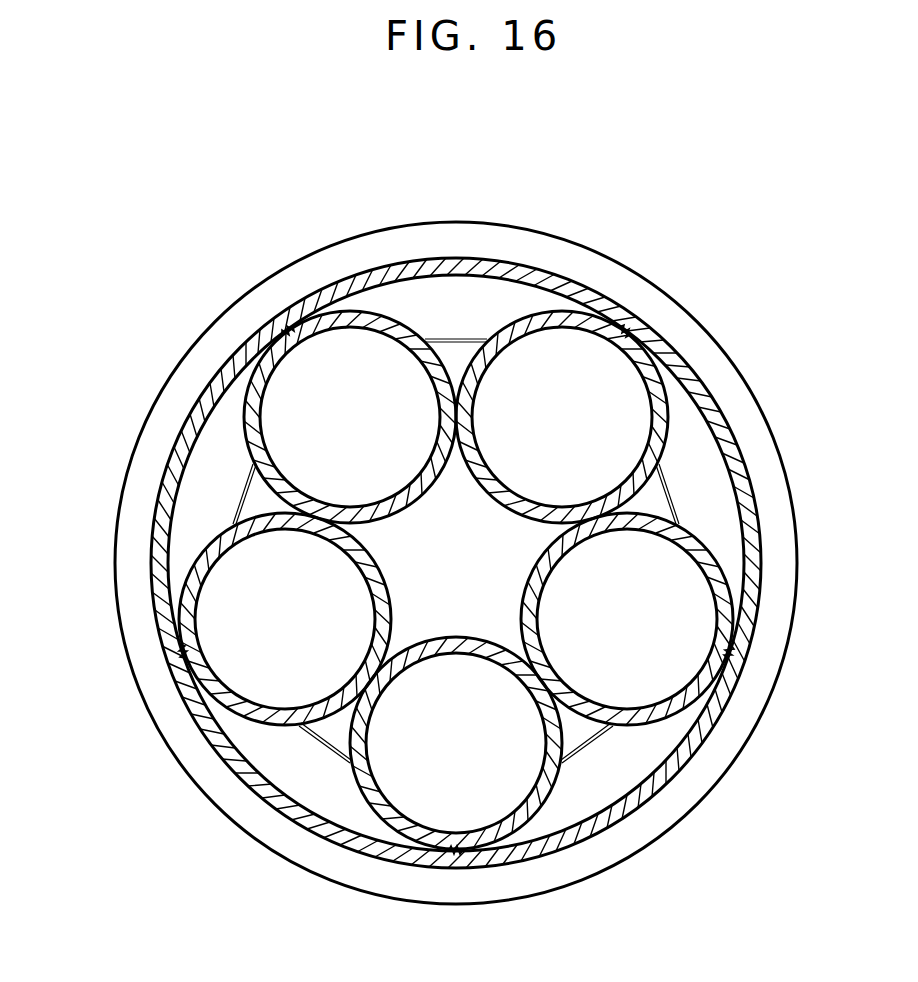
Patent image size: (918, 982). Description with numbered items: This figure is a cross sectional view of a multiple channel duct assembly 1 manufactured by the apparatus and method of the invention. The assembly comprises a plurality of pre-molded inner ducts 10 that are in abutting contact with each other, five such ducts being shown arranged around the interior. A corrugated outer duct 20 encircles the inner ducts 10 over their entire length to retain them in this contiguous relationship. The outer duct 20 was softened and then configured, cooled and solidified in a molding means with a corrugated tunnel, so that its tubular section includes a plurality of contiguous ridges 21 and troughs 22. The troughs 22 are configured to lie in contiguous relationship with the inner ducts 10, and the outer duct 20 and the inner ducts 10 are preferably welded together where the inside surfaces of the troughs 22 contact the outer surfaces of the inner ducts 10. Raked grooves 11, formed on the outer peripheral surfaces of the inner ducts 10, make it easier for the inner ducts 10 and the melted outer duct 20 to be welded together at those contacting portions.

The optical fiber unit 1 is at (375, 565).
The inner duct 10 is at (240, 438).
The raked groove 11 is at (285, 326).
The outer duct 20 is at (493, 563).
The ridge 21 is at (738, 727).
The trough 22 is at (748, 563).